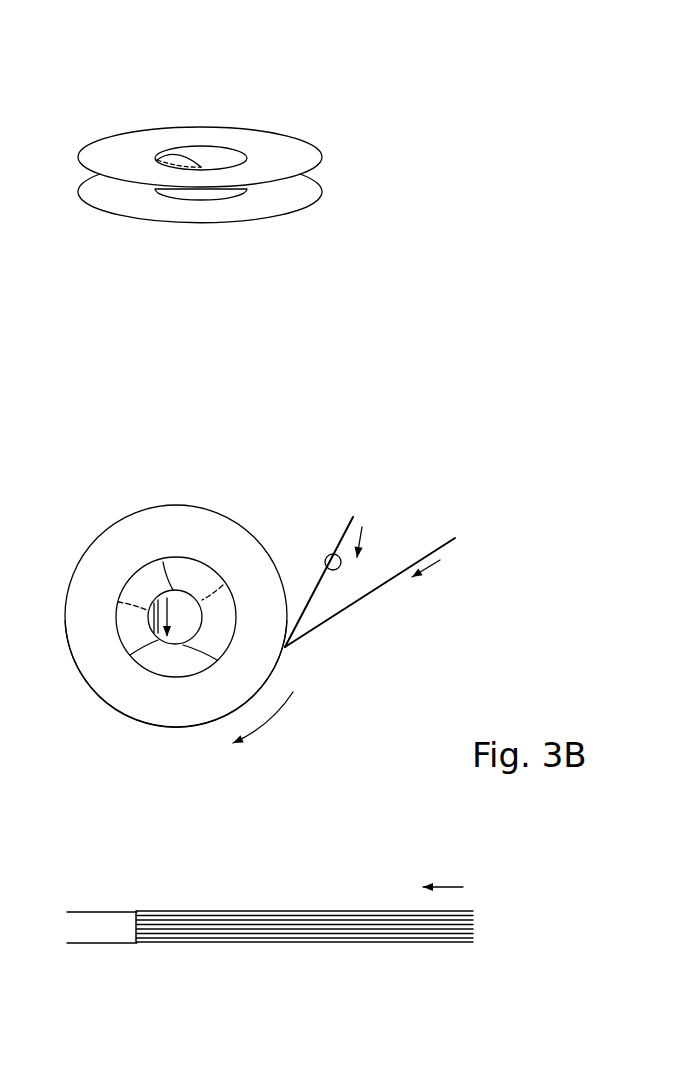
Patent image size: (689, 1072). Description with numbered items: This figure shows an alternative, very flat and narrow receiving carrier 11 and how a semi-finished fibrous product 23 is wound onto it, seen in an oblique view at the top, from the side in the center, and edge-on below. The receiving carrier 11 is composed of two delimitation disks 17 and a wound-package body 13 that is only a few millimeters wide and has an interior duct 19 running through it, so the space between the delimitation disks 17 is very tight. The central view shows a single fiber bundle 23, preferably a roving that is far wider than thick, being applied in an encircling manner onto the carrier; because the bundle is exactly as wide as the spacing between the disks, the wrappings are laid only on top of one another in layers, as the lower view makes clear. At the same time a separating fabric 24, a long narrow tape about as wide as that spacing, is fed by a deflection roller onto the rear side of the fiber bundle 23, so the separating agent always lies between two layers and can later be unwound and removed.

The receiving carrier 11 is at (250, 531).
The wound-package body 13 is at (184, 196).
The delimitation disks 17 is at (105, 153).
The interior duct 19 is at (200, 147).
The semi-finished fibrous product 23 is at (443, 540).
The separating fabric 24 is at (349, 517).